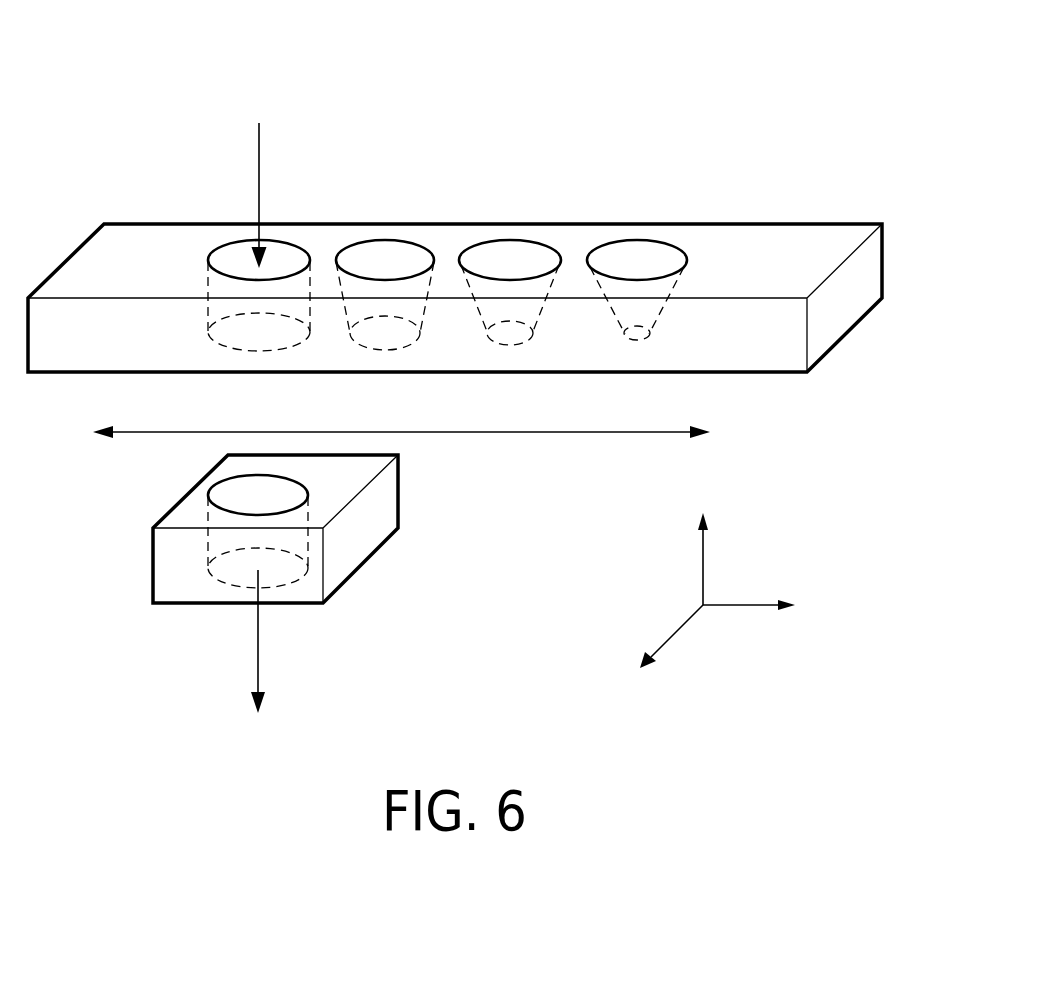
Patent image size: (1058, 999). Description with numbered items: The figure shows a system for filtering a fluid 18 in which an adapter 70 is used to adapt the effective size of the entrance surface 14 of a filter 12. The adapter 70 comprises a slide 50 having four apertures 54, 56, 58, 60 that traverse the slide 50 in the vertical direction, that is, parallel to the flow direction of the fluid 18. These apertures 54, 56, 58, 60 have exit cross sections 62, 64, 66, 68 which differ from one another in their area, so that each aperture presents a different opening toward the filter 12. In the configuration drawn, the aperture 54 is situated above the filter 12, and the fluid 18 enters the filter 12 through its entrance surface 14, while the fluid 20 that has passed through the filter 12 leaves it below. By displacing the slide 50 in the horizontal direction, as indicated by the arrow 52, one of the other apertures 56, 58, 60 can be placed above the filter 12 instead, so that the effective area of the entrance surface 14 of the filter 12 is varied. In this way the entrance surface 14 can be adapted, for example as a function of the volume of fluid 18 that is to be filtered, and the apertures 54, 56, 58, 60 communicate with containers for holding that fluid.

The adapter 70 is at (769, 65).
The slide 50 is at (783, 236).
The aperture 54 is at (288, 248).
The aperture 56 is at (388, 248).
The aperture 58 is at (512, 248).
The aperture 60 is at (640, 248).
The exit cross section 62 is at (262, 350).
The exit cross section 64 is at (386, 350).
The exit cross section 66 is at (512, 347).
The exit cross section 68 is at (637, 340).
The fluid 18 is at (258, 151).
The arrow 52 is at (530, 435).
The filter 12 is at (207, 496).
The entrance surface 14 is at (292, 496).
The fluid leaving the filter 20 is at (259, 672).